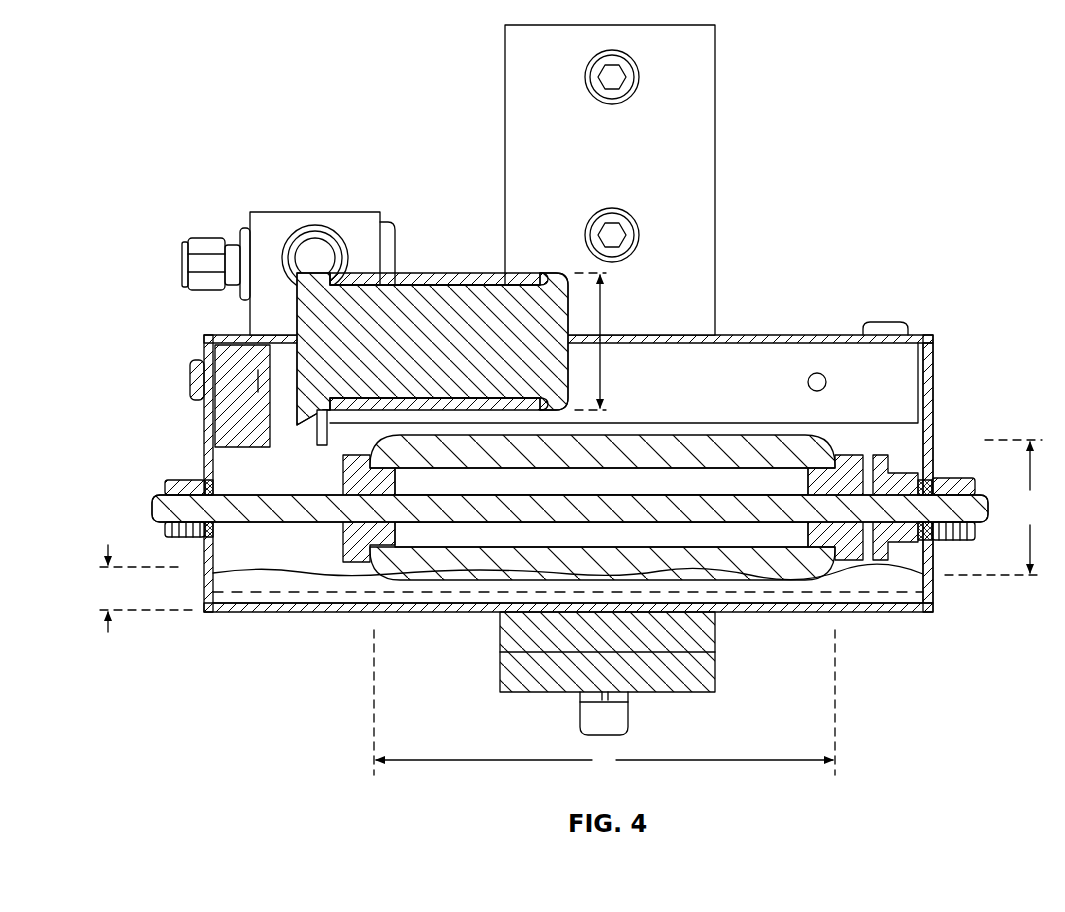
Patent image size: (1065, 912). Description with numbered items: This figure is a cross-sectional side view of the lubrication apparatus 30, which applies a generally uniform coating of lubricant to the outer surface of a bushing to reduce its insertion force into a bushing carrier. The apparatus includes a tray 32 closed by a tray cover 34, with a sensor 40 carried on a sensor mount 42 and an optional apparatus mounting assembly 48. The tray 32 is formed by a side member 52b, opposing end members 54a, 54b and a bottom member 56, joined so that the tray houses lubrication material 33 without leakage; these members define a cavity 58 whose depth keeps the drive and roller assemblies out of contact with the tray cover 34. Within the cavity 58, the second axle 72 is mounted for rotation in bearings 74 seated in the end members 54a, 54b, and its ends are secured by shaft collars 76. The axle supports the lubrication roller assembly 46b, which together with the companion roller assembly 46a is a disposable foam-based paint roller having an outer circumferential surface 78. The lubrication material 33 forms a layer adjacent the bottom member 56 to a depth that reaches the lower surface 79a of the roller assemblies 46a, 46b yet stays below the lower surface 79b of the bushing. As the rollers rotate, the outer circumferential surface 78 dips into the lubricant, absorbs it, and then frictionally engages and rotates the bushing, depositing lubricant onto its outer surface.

The lubrication apparatus 30 is at (928, 84).
The tray 32 is at (932, 588).
The lubrication material 33 is at (310, 592).
The tray cover 34 is at (822, 335).
The sensor 40 is at (315, 212).
The sensor mount 42 is at (250, 325).
The lubrication roller assembly 46a is at (369, 508).
The lubrication roller assembly 46b is at (826, 565).
The apparatus mounting assembly 48 is at (718, 186).
The side member 52b is at (780, 352).
The end member 54a is at (205, 450).
The end member 54b is at (935, 380).
The bottom member 56 is at (413, 614).
The cavity 58 is at (917, 456).
The second axle 72 is at (155, 506).
The bearing 74 is at (205, 533).
The shaft collar 76 is at (170, 530).
The outer circumferential surface 78 is at (690, 434).
The lower surface of the roller assemblies 79a is at (765, 583).
The lower surface of the bushing 79b is at (365, 410).